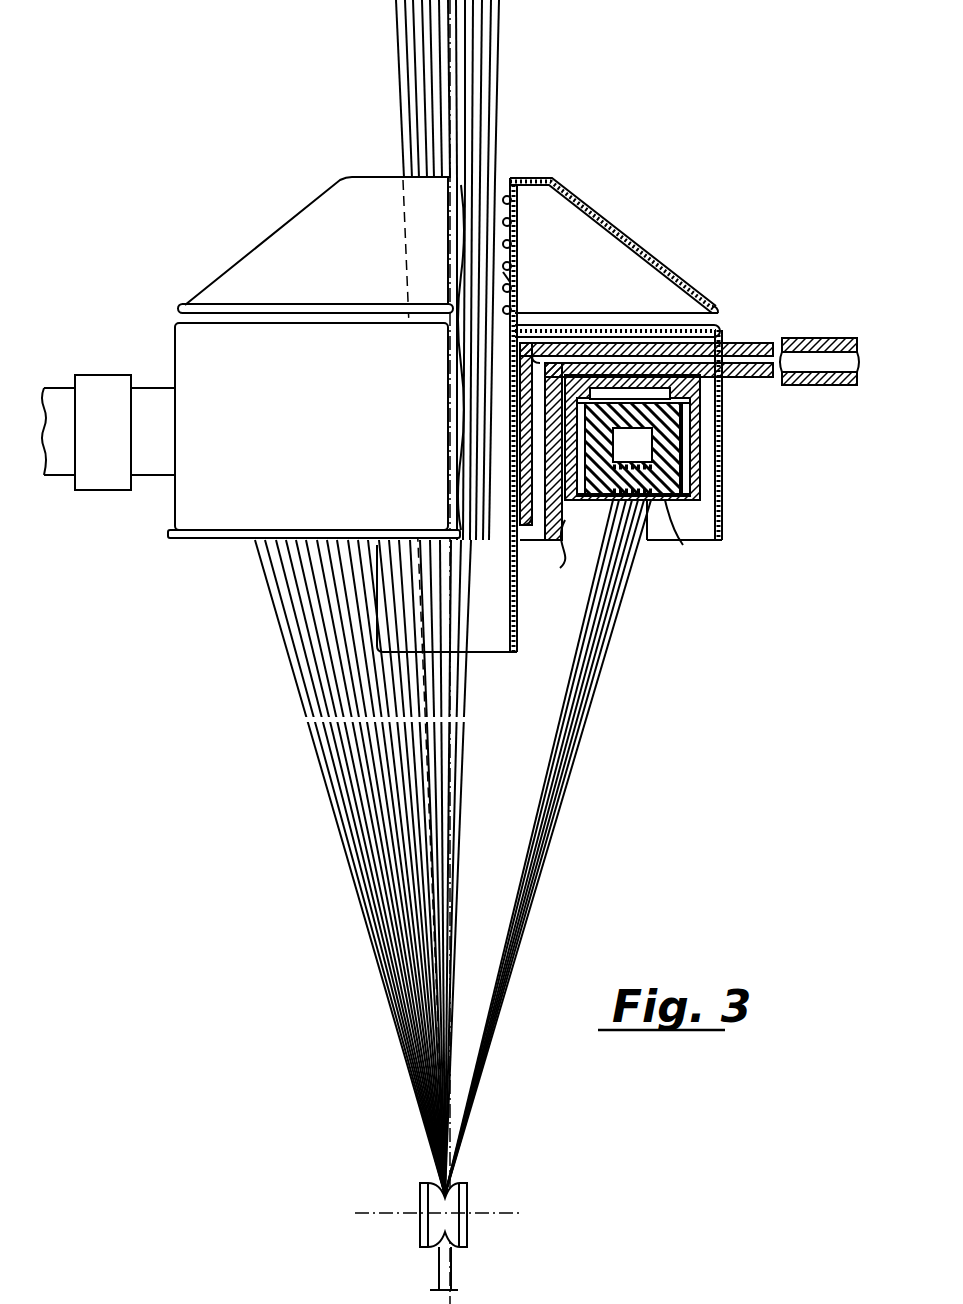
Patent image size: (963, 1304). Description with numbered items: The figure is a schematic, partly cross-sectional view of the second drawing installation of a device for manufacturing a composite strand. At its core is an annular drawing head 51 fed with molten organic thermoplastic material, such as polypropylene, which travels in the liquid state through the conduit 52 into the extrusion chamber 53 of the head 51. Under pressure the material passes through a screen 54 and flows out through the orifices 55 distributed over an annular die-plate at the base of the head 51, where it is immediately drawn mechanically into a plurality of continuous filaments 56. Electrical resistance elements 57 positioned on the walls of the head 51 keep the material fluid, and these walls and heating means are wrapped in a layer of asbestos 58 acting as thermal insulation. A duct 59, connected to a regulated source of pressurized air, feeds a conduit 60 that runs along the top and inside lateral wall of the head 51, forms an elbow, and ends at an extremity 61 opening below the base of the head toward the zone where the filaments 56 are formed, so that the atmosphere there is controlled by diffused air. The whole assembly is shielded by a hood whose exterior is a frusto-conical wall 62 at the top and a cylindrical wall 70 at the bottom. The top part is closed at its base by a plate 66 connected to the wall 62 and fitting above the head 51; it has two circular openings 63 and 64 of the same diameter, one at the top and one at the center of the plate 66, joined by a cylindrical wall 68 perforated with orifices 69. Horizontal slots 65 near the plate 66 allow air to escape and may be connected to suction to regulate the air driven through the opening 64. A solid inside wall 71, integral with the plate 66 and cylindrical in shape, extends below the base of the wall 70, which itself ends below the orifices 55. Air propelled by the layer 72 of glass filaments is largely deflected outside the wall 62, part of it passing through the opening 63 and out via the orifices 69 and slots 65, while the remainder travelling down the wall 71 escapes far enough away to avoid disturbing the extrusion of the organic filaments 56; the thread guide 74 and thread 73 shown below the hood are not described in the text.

The annular drawing head 51 is at (741, 563).
The conduit 52 is at (62, 395).
The extrusion chamber 53 is at (640, 440).
The screen 54 is at (683, 505).
The orifices 55 is at (652, 502).
The continuous filaments 56 is at (312, 694).
The electrical resistance elements 57 is at (683, 420).
The layer of asbestos 58 is at (705, 465).
The duct 59 is at (815, 340).
The conduit 60 is at (760, 345).
The extremity of the conduit 61 is at (621, 471).
The frusto-conical wall 62 is at (285, 250).
The circular opening 63 is at (510, 180).
The circular opening 64 is at (495, 318).
The horizontal slots 65 is at (175, 314).
The plate 66 is at (625, 332).
The cylindrical wall 68 is at (512, 277).
The orifices 69 is at (512, 250).
The cylindrical wall 70 is at (185, 505).
The solid inside wall 71 is at (517, 636).
The layer of glass filaments 72 is at (410, 80).
The thread 73 is at (452, 1287).
The eyelet 74 is at (470, 1203).